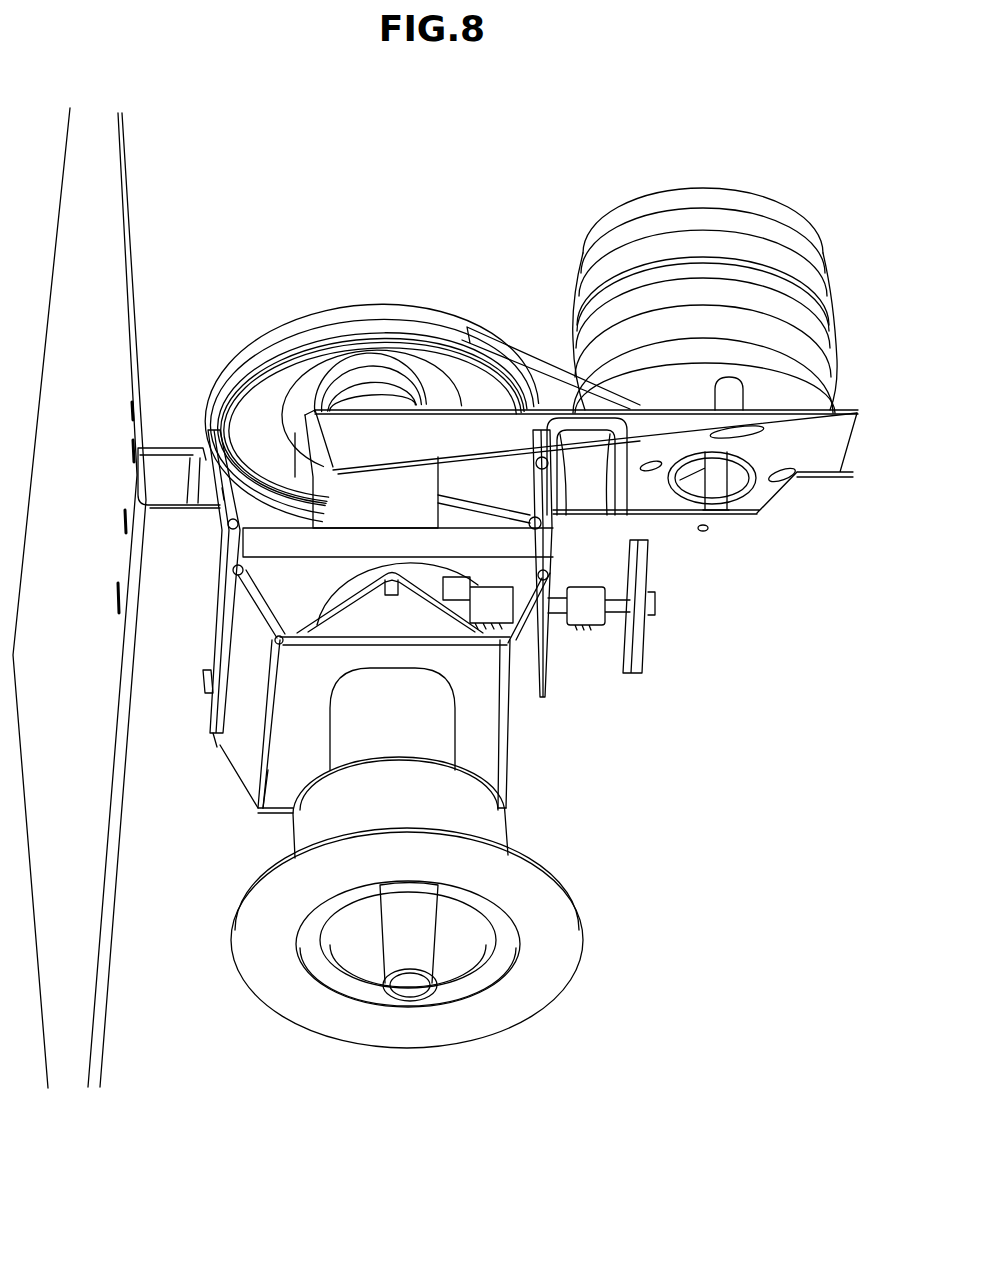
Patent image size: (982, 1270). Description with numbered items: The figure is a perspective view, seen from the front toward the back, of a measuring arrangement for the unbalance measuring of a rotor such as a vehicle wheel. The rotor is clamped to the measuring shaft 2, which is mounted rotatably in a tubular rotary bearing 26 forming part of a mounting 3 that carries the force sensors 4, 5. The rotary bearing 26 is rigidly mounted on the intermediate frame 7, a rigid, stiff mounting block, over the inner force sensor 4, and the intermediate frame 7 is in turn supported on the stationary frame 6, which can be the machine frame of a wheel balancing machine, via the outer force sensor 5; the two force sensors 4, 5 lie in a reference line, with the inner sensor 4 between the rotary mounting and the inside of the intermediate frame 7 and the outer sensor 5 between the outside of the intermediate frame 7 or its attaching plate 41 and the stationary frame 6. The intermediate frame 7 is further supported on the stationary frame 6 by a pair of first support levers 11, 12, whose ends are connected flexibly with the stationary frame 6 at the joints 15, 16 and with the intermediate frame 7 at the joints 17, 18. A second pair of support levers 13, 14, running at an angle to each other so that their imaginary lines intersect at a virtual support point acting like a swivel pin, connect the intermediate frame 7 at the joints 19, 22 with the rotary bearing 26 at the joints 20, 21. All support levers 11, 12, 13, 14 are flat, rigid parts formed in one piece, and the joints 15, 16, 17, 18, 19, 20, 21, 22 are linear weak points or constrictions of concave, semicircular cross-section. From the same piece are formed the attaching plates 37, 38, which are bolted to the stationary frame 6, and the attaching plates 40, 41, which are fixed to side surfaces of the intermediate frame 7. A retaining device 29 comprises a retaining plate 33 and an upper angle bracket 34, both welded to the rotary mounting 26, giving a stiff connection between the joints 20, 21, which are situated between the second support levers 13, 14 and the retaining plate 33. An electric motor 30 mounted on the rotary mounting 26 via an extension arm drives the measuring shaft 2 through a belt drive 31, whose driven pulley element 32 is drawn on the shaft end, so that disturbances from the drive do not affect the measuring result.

The measuring shaft 2 is at (423, 987).
The mounting 3 is at (192, 680).
The inner force sensor 4 is at (470, 634).
The outer force sensor 5 is at (592, 610).
The stationary frame 6 is at (162, 452).
The intermediate frame 7 is at (283, 596).
The first support lever 11 is at (540, 490).
The first support lever 12 is at (222, 492).
The second support lever 13 is at (512, 790).
The second support lever 14 is at (238, 735).
The joint 15 is at (536, 463).
The joint 16 is at (206, 447).
The joint 17 is at (545, 527).
The joint 18 is at (229, 526).
The joint 19 is at (545, 627).
The joint 20 is at (507, 735).
The joint 21 is at (263, 768).
The joint 22 is at (212, 712).
The tubular rotary bearing 26 is at (350, 480).
The retaining device 29 is at (522, 680).
The electric motor 30 is at (663, 200).
The belt drive 31 is at (453, 332).
The pulley hub 32 is at (438, 430).
The retaining plate 33 is at (297, 820).
The angle bracket 34 is at (335, 620).
The attaching plate 37 is at (228, 415).
The attaching plate 38 is at (545, 407).
The attaching plate 40 is at (236, 555).
The attaching plate 41 is at (545, 550).